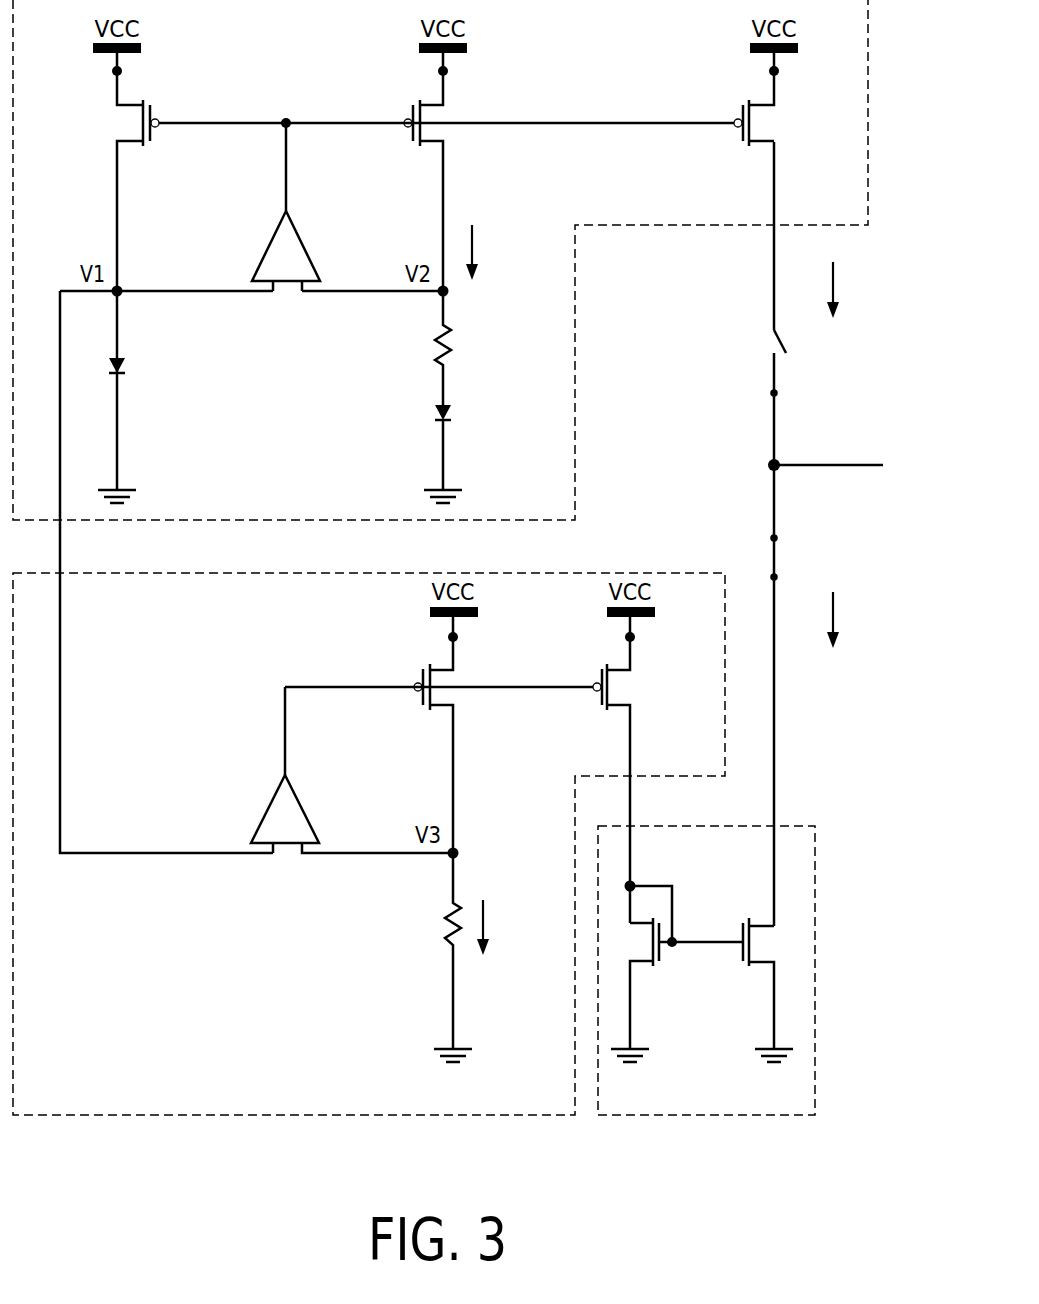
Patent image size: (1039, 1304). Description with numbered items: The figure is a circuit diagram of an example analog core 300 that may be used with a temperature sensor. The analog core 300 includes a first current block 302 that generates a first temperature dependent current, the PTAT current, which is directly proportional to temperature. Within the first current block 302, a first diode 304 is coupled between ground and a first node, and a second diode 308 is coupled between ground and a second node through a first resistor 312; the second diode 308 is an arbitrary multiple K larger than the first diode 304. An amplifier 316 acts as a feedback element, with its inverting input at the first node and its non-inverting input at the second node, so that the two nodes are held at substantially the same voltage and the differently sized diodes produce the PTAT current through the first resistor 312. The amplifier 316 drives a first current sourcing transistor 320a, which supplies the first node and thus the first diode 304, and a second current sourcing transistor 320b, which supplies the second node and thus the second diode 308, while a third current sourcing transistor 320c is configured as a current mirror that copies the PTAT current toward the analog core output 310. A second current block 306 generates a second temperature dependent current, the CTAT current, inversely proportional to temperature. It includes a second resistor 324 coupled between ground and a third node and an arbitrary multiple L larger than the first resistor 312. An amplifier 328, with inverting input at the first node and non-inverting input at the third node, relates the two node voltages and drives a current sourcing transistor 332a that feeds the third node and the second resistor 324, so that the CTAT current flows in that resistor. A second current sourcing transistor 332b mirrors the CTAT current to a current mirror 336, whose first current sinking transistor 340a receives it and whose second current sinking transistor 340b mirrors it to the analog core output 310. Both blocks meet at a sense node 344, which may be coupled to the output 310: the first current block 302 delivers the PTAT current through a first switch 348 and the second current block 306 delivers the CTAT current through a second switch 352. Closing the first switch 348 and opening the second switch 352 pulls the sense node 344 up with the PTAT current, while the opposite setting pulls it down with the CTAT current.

The analog core 300 is at (813, 735).
The first current block 302 is at (293, 520).
The diode D1 304 is at (122, 368).
The second current block 306 is at (295, 1115).
The diode D2 308 is at (438, 413).
The analog core output 310 is at (823, 465).
The resistor R1 312 is at (440, 332).
The amplifier 316 is at (264, 250).
The first current sourcing transistor 320a is at (150, 100).
The second current sourcing transistor 320b is at (418, 103).
The third current sourcing transistor 320c is at (746, 105).
The resistor R2 324 is at (447, 940).
The amplifier 328 is at (275, 793).
The current sourcing transistor 332a is at (422, 668).
The second current sourcing transistor 332b is at (632, 662).
The current mirror 336 is at (816, 968).
The first current sinking transistor 340a is at (630, 922).
The second current sinking transistor 340b is at (748, 920).
The V_SENSE node 344 is at (772, 465).
The first switch 348 is at (772, 290).
The second switch 352 is at (772, 547).